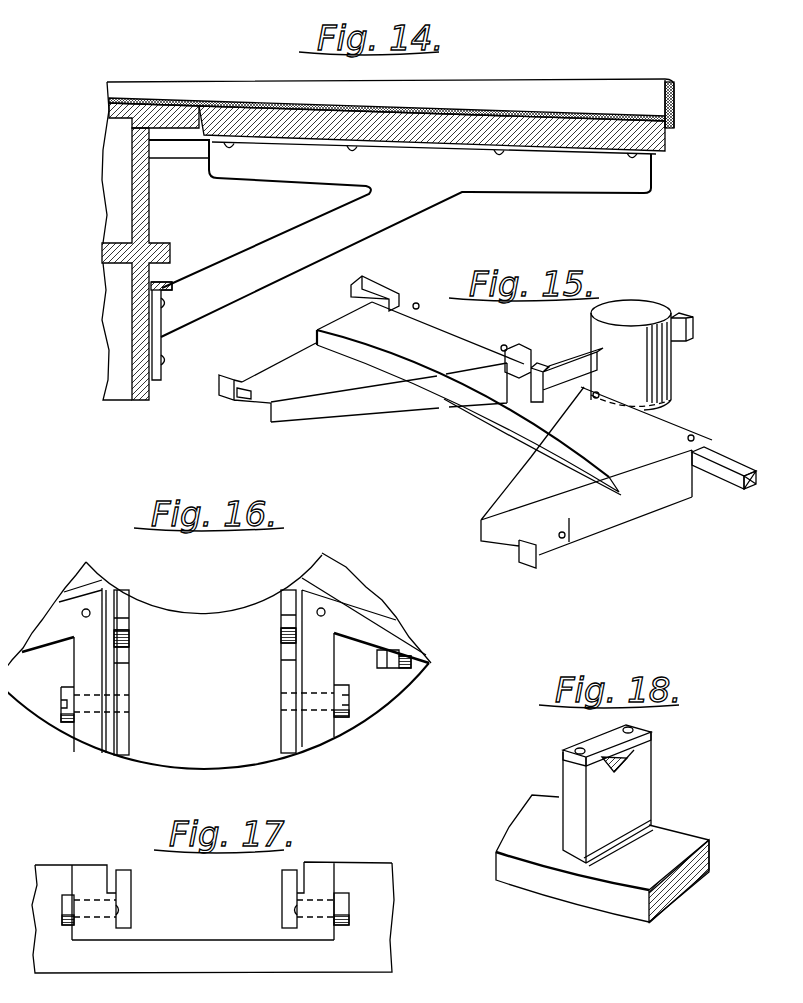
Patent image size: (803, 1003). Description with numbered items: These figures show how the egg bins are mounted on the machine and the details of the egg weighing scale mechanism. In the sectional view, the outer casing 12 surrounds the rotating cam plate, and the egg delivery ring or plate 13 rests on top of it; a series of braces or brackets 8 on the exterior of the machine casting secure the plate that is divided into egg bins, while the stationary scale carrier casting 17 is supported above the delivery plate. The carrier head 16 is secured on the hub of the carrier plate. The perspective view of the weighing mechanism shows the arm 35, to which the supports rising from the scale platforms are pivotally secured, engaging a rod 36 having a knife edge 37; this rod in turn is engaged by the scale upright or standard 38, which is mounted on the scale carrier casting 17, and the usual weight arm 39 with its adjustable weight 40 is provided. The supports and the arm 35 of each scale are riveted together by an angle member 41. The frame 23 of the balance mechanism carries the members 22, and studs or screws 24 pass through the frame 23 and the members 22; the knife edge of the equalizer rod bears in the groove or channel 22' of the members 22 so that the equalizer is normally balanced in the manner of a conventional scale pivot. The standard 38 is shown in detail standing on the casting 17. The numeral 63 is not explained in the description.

In FIG. 14, the braces or brackets 8 is at (374, 219).
In FIG. 14, the outer casing 12 is at (143, 214).
In FIG. 14, the egg delivery ring or plate 13 is at (153, 110).
In FIG. 14, the carrier head 16 is at (556, 118).
In FIG. 16, the carrier head 16 is at (205, 615).
In FIG. 17, the carrier head 16 is at (247, 965).
In FIG. 18, the scale carrier casting 17 is at (683, 888).
In FIG. 16, the members 22 is at (205, 672).
In FIG. 17, the members 22 is at (204, 899).
In FIG. 16, the groove or channel 22' is at (205, 642).
In FIG. 16, the frame 23 is at (85, 668).
In FIG. 17, the frame 23 is at (320, 877).
In FIG. 16, the studs or screws 24 is at (68, 713).
In FIG. 15, the arm 35 is at (527, 488).
In FIG. 15, the rod 36 is at (710, 451).
In FIG. 15, the knife edge 37 is at (366, 298).
In FIG. 18, the scale upright or standard 38 is at (632, 788).
In FIG. 15, the weight arm 39 is at (688, 330).
In FIG. 15, the adjustable weight 40 is at (628, 306).
In FIG. 15, the angle member 41 is at (430, 383).
In FIG. 15, the ribbed portion 63 is at (657, 383).